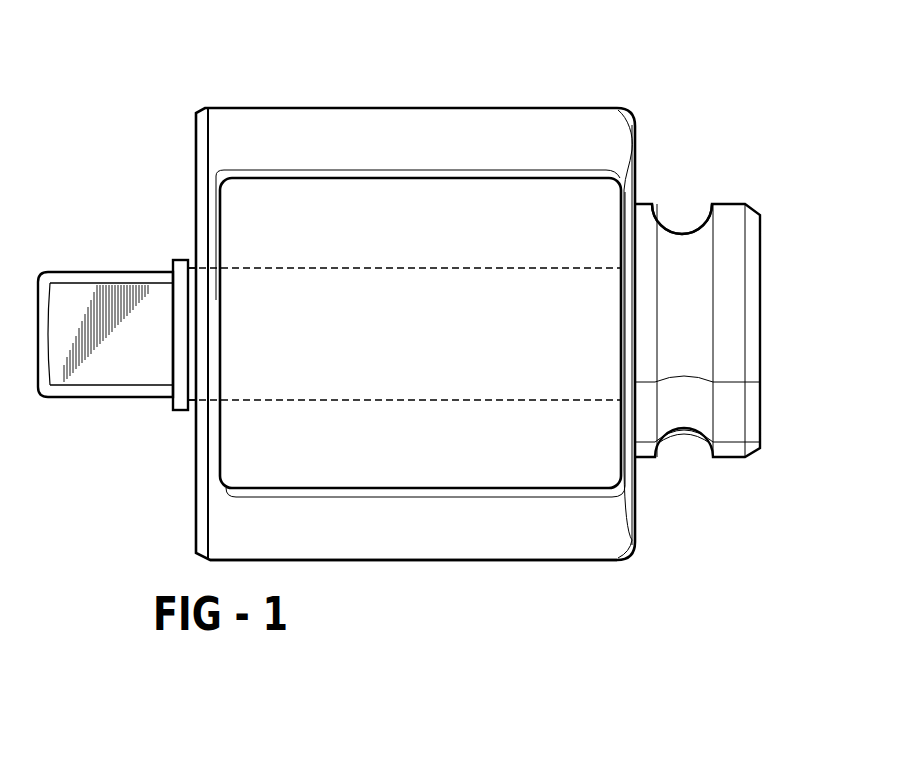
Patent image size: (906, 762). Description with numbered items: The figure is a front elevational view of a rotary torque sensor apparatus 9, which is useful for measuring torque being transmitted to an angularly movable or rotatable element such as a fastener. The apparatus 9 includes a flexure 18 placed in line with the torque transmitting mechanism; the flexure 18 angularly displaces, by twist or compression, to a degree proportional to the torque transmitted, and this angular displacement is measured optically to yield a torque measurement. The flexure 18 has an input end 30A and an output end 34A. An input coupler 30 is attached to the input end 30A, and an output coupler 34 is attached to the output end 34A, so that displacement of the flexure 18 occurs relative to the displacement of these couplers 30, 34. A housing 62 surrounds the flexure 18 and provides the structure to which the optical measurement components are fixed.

The rotary torque sensor apparatus 9 is at (523, 108).
The flexure 18 is at (590, 400).
The input coupler 30 is at (707, 266).
The input end 30A is at (647, 212).
The output coupler 34 is at (83, 378).
The output end 34A is at (180, 297).
The housing 62 is at (415, 553).